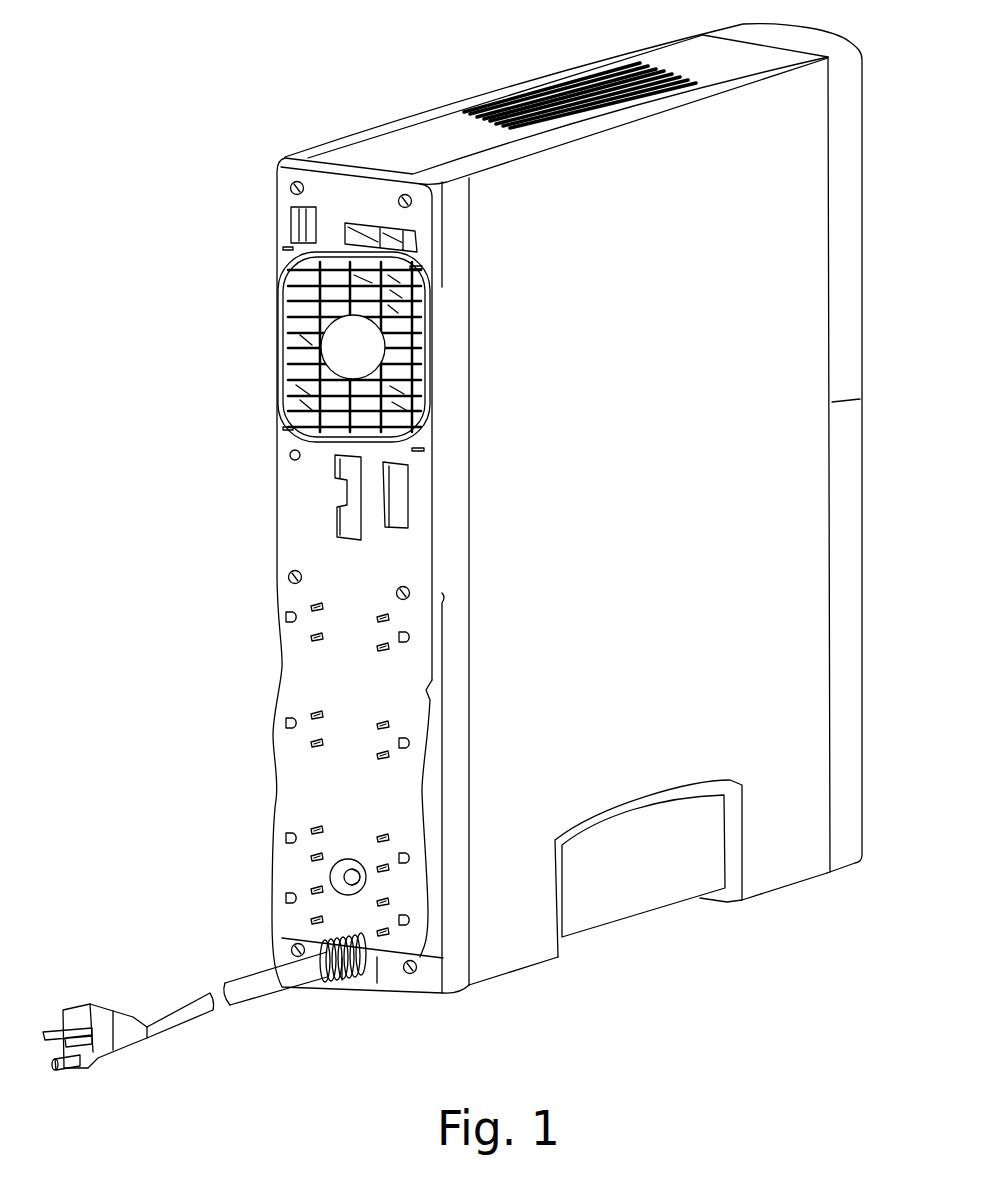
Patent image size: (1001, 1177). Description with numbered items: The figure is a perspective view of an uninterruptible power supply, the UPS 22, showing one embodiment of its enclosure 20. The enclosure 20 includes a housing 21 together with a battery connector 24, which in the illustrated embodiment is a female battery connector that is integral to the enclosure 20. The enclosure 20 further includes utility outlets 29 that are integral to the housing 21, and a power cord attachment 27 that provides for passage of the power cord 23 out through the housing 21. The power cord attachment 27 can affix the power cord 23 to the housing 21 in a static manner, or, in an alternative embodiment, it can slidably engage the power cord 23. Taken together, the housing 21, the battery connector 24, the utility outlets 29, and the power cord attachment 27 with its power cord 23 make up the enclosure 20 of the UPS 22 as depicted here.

The enclosure 20 is at (853, 140).
The housing 21 is at (286, 256).
The UPS 22 is at (500, 58).
The power cord 23 is at (130, 1007).
The battery connector 24 is at (355, 224).
The power cord attachment 27 is at (350, 983).
The utility outlets 29 is at (286, 619).